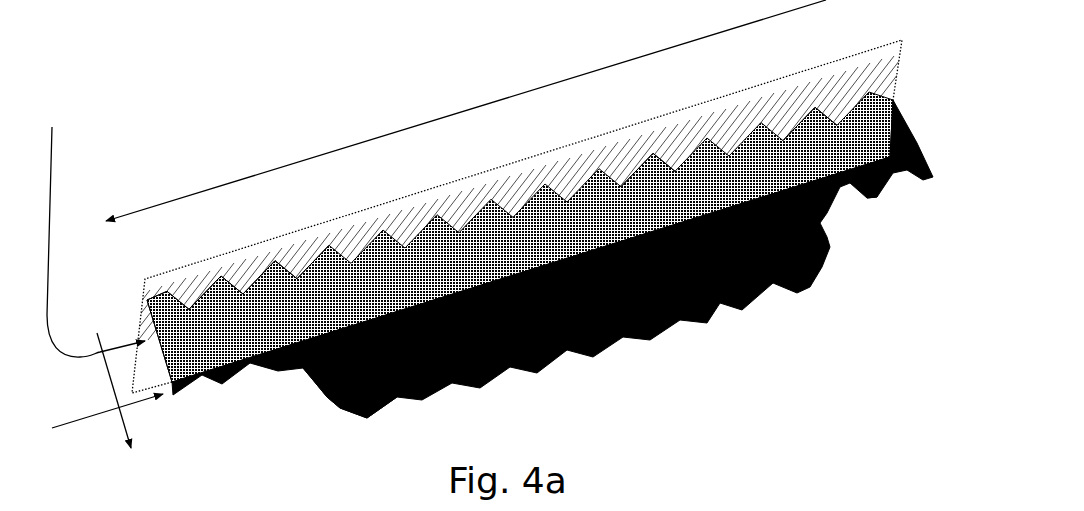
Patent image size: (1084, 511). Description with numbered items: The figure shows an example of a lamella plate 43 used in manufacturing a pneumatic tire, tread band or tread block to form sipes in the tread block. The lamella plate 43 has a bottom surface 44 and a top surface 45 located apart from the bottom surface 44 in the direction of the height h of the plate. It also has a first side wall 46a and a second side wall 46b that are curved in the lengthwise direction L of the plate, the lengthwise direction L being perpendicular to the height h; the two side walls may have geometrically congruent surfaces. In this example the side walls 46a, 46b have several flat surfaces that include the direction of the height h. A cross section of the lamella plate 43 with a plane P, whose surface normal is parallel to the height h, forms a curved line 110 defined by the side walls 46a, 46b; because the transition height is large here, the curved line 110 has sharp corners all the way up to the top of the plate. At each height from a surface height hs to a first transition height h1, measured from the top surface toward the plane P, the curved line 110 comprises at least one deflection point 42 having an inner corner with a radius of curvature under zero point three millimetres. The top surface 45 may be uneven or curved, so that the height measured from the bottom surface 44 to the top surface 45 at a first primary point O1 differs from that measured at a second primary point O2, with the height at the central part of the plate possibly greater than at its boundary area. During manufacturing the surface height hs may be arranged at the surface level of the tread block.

The deflection point 42 is at (158, 278).
The lamella plate 43 is at (900, 112).
The bottom surface 44 is at (291, 257).
The top surface 45 is at (314, 384).
The first side wall 46a is at (597, 342).
The second side wall 46b is at (406, 226).
The curved line 110 is at (520, 214).
The first primary point O1 is at (822, 103).
The second primary point O2 is at (660, 155).
The plane P is at (852, 78).
The lengthwise direction L is at (466, 110).
The height h is at (107, 386).
The first transition height h1 is at (106, 411).
The surface height hs is at (101, 208).